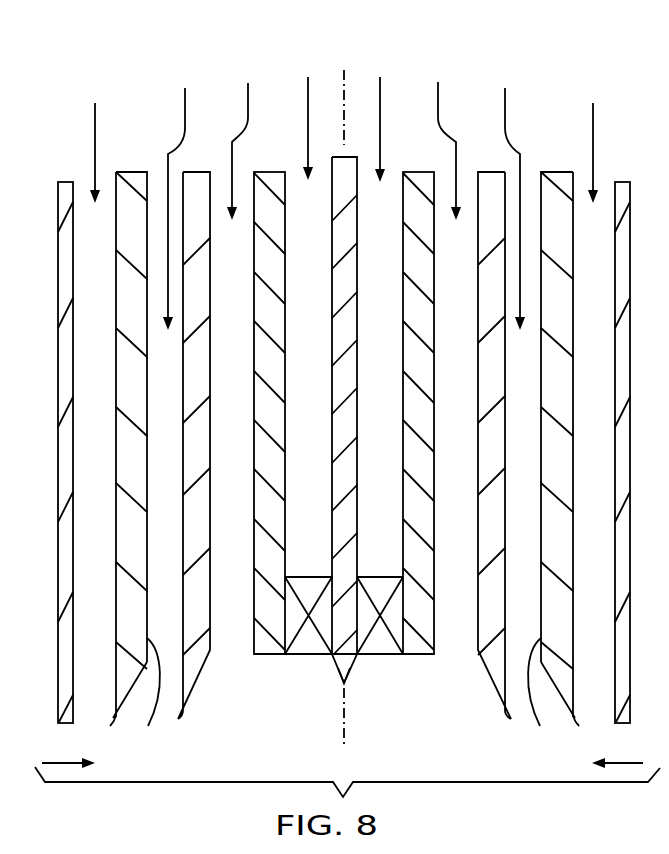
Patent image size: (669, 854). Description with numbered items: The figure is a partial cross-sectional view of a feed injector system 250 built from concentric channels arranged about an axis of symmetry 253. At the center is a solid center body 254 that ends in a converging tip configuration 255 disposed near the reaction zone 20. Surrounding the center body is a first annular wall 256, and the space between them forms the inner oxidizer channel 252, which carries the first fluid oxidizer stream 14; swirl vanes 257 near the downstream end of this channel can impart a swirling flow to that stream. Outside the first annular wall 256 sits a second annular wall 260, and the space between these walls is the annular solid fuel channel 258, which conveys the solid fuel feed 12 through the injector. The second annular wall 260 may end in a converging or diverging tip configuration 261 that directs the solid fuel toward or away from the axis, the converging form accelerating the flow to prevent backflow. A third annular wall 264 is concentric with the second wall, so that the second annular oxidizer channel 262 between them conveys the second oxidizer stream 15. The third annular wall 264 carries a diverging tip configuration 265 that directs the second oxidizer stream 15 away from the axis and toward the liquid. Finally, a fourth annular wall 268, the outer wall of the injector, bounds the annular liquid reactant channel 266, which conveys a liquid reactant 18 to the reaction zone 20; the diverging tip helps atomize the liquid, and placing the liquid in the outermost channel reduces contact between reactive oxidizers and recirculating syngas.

The solid fuel feed 12 is at (344, 134).
The first fluid oxidizer stream 14 is at (308, 122).
The second oxidizer stream 15 is at (344, 194).
The liquid reactant 18 is at (95, 127).
The reaction zone 20 is at (54, 763).
The feed injector system 250 is at (150, 74).
The inner oxidizer channel 252 is at (296, 165).
The axis of symmetry 253 is at (341, 717).
The solid center body 254 is at (358, 366).
The converging tip configuration 255 is at (345, 686).
The first annular wall 256 is at (288, 282).
The swirl vanes 257 is at (312, 575).
The annular solid fuel channel 258 is at (221, 165).
The second annular wall 260 is at (212, 612).
The converging or diverging tip configuration 261 is at (178, 720).
The second annular oxidizer channel 262 is at (156, 165).
The third annular wall 264 is at (344, 465).
The diverging tip configuration 265 is at (113, 722).
The annular liquid reactant channel 266 is at (83, 171).
The fourth annular wall 268 is at (74, 652).